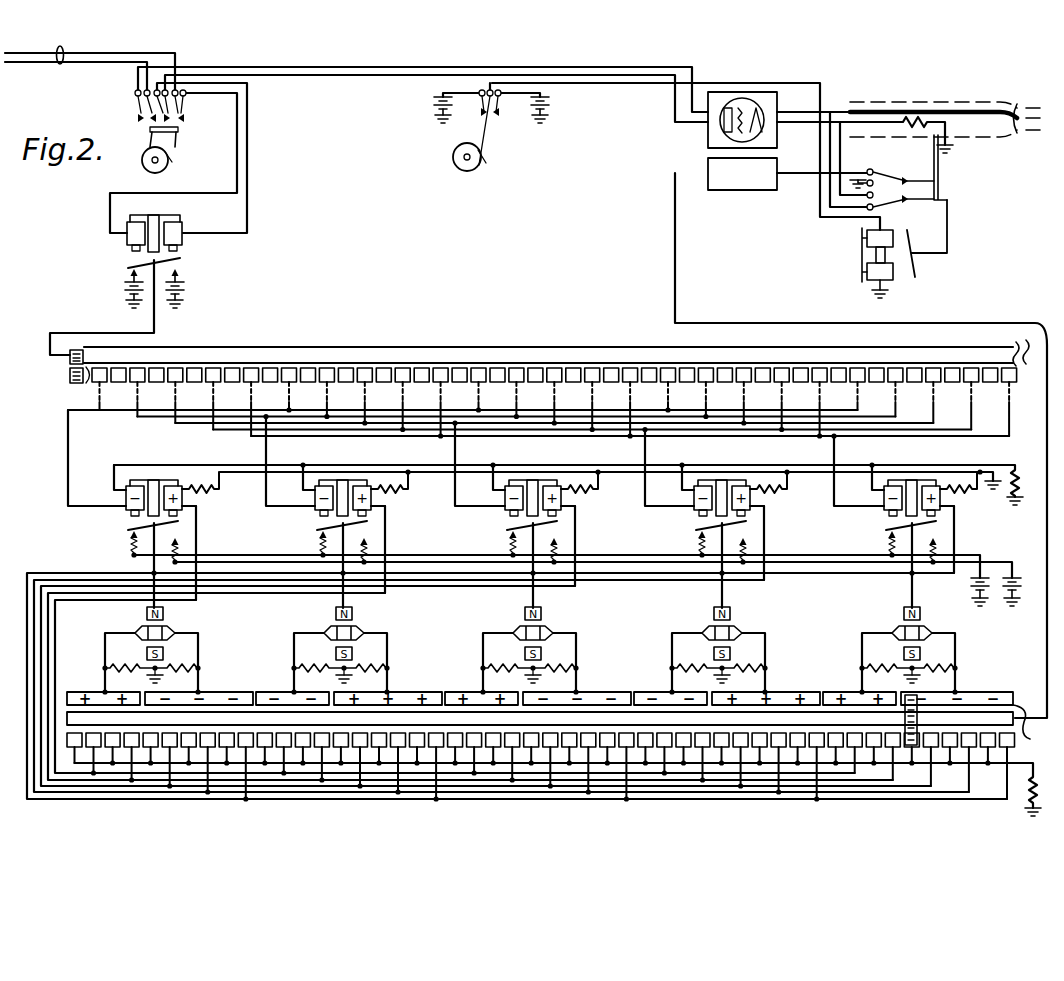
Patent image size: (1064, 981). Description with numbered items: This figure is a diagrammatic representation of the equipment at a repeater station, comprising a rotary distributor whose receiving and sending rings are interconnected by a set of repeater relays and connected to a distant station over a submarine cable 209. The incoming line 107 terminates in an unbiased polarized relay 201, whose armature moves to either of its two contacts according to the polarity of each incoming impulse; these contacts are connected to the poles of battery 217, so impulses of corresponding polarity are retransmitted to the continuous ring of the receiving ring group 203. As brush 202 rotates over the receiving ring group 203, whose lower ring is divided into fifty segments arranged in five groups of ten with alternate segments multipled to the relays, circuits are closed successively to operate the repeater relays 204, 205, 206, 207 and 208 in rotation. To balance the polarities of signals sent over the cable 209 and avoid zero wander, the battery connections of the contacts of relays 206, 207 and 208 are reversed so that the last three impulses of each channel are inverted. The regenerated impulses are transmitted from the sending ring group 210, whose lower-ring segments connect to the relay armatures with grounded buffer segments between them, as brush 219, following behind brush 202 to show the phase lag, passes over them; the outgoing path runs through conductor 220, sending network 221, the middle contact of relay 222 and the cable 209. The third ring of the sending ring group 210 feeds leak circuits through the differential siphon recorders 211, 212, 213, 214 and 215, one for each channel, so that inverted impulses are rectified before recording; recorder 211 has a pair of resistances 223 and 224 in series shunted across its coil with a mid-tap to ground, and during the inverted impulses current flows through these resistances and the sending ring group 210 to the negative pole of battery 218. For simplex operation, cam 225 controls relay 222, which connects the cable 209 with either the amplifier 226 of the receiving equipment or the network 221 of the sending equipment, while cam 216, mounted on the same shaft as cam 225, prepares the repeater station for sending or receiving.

The line 107 is at (60, 64).
The unbiased polarized relay 201 is at (122, 240).
The brush 202 is at (84, 381).
The receiving ring group 203 is at (1040, 330).
The repeater relay 204 is at (155, 482).
The repeater relay 205 is at (344, 482).
The repeater relay 206 is at (534, 482).
The repeater relay 207 is at (723, 482).
The repeater relay 208 is at (913, 482).
The submarine cable 209 is at (1018, 110).
The sending ring group 210 is at (564, 727).
The siphon recorder 211 is at (154, 651).
The siphon recorder 212 is at (359, 633).
The siphon recorder 213 is at (548, 633).
The siphon recorder 214 is at (737, 633).
The siphon recorder 215 is at (927, 633).
The cam 216 is at (168, 168).
The battery 217 is at (177, 296).
The battery 218 is at (982, 594).
The brush 219 is at (917, 718).
The conductor 220 is at (1047, 531).
The sending network 221 is at (728, 190).
The relay 222 is at (867, 272).
The resistance 223 is at (193, 666).
The resistance 224 is at (107, 660).
The cam 225 is at (465, 171).
The amplifier 226 is at (708, 125).